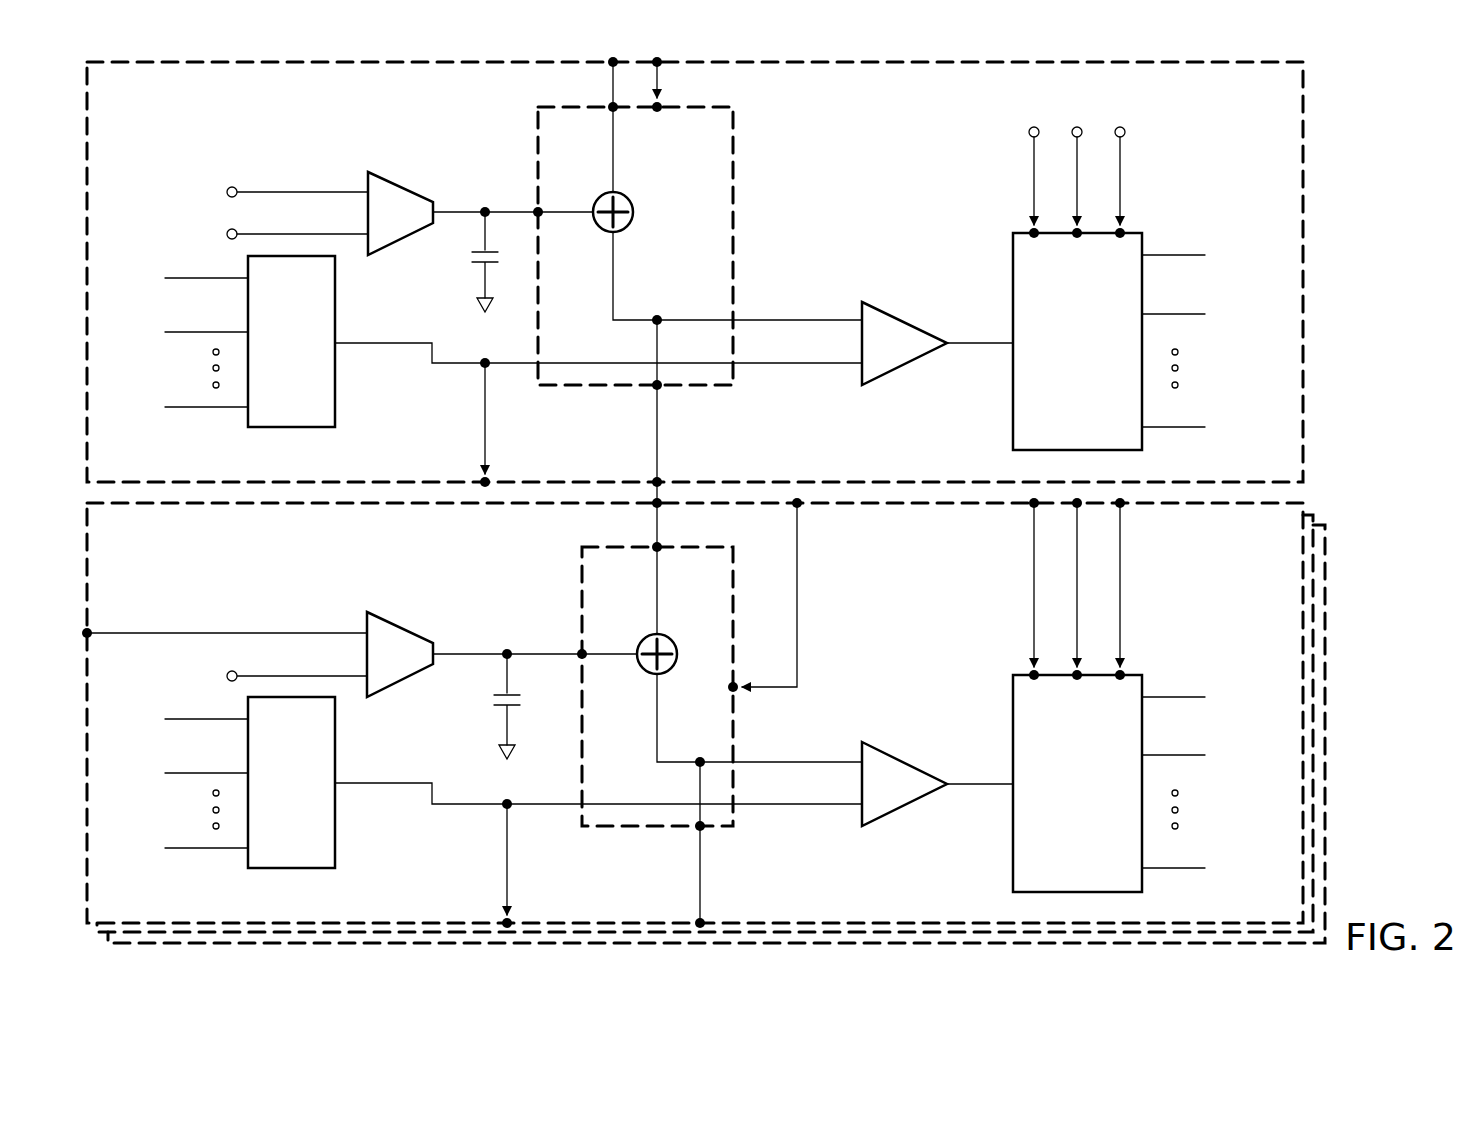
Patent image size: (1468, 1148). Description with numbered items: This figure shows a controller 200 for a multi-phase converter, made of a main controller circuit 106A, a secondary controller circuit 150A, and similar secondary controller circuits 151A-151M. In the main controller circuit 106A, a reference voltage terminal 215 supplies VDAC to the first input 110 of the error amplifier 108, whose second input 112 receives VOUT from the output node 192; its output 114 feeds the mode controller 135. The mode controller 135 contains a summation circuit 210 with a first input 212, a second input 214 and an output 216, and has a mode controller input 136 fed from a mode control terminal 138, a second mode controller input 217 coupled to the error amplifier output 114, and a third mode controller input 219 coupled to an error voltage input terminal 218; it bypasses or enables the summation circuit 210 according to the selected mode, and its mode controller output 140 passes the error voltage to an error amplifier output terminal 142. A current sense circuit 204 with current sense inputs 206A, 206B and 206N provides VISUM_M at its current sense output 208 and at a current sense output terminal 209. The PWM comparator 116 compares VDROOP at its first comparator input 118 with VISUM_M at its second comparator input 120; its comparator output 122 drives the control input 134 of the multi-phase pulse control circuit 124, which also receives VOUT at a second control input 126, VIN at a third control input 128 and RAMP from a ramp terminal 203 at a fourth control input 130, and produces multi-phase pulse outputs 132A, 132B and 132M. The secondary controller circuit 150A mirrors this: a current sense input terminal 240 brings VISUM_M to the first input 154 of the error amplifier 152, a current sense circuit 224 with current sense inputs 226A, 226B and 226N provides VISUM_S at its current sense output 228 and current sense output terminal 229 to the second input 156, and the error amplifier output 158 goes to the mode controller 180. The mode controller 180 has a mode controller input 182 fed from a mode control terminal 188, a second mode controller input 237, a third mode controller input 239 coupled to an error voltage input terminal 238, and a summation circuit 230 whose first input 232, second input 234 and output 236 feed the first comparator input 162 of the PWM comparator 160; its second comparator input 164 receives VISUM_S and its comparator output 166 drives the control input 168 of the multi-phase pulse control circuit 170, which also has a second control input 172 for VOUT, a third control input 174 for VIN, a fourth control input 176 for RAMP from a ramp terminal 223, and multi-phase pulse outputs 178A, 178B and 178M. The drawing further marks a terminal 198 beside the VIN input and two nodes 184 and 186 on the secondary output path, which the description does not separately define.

The main controller circuit 106A is at (203, 137).
The error amplifier or integrator 108 is at (398, 182).
The first error amplifier or integrator input 110 is at (365, 190).
The second error amplifier or integrator input 112 is at (370, 250).
The error amplifier or integrator output 114 is at (436, 226).
The PWM comparator 116 is at (910, 372).
The first comparator input 118 is at (863, 301).
The second comparator input 120 is at (861, 380).
The comparator output 122 is at (950, 342).
The multi-phase pulse control circuit 124 is at (1097, 377).
The second control input 126 is at (1031, 231).
The third control input 128 is at (1080, 230).
The fourth control input 130 is at (1124, 231).
The multi-phase pulse output 132A is at (1145, 255).
The multi-phase pulse output 132B is at (1145, 314).
The multi-phase pulse output 132M is at (1145, 430).
The control input 134 is at (1011, 350).
The mode controller 135 is at (737, 216).
The mode controller input 136 is at (659, 110).
The mode control pin or terminal 138 is at (659, 66).
The mode controller output 140 is at (655, 389).
The error amplifier output terminal 142 is at (660, 481).
The secondary controller circuit 150A is at (203, 578).
The secondary controller circuits 151A-151M is at (1328, 553).
The error amplifier or integrator 152 is at (398, 624).
The first error amplifier or integrator input 154 is at (365, 630).
The second error amplifier or integrator input 156 is at (369, 695).
The error amplifier or integrator output 158 is at (436, 667).
The PWM comparator 160 is at (908, 756).
The first comparator input 162 is at (863, 742).
The second comparator input 164 is at (861, 821).
The comparator output 166 is at (950, 788).
The control input 168 is at (1011, 788).
The multi-phase pulse control circuit 170 is at (1097, 817).
The second control input 172 is at (1031, 673).
The third control input 174 is at (1080, 672).
The fourth control input 176 is at (1124, 673).
The multi-phase pulse output 178A is at (1145, 697).
The multi-phase pulse output 178B is at (1145, 755).
The multi-phase pulse output 178M is at (1145, 870).
The mode controller 180 is at (737, 712).
The mode controller input 182 is at (736, 685).
The node 184 is at (698, 829).
The node 186 is at (703, 921).
The mode control pin or terminal 188 is at (800, 505).
The output node 192 is at (227, 232).
The VIN input 198 is at (1077, 127).
The controller 200 is at (1352, 335).
The ramp terminal 203 is at (1124, 131).
The current sense circuit 204 is at (312, 377).
The current sense input 206A is at (246, 277).
The current sense input 206B is at (246, 331).
The current sense input 206N is at (246, 410).
The current sense output 208 is at (338, 345).
The current sense output terminal 209 is at (483, 480).
The summation circuit 210 is at (607, 234).
The first summation circuit input 212 is at (616, 195).
The second summation circuit input 214 is at (594, 210).
The reference voltage terminal 215 is at (227, 190).
The summation circuit output 216 is at (617, 234).
The second mode controller input 217 is at (535, 210).
The error voltage input terminal 218 is at (611, 66).
The third mode controller input 219 is at (611, 110).
The ramp terminal 223 is at (1123, 505).
The current sense circuit 224 is at (312, 818).
The current sense input 226A is at (246, 718).
The current sense input 226B is at (246, 772).
The current sense input 226N is at (246, 851).
The current sense output 228 is at (338, 786).
The current sense output terminal 229 is at (505, 921).
The summation circuit 230 is at (650, 676).
The first summation circuit input 232 is at (660, 636).
The second summation circuit input 234 is at (638, 652).
The summation circuit output 236 is at (661, 677).
The second mode controller input 237 is at (579, 652).
The error voltage input terminal 238 is at (654, 507).
The third mode controller input 239 is at (654, 550).
The current sense input terminal 240 is at (91, 631).